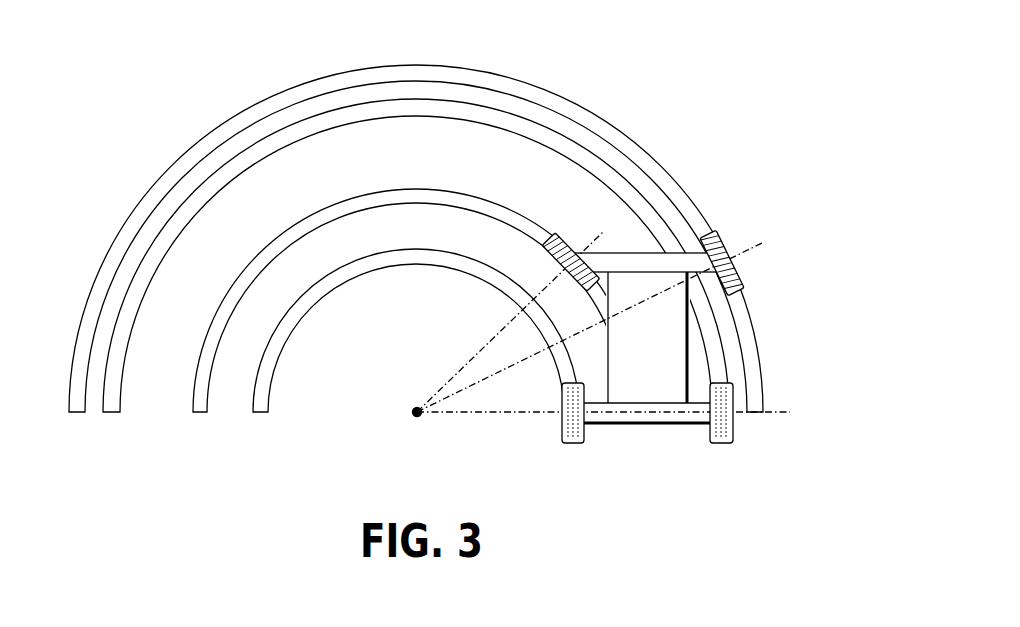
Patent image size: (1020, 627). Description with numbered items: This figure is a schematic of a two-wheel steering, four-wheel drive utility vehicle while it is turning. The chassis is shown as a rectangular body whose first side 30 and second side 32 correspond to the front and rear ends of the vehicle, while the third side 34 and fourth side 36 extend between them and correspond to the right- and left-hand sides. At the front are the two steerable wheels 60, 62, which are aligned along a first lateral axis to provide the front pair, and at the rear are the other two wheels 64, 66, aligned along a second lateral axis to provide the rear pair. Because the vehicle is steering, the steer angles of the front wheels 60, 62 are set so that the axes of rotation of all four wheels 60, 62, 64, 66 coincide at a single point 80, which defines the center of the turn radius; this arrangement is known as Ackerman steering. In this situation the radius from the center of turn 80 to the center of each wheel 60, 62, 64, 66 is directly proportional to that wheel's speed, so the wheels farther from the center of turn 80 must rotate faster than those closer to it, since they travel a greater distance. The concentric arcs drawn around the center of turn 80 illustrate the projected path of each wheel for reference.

The first side 30 is at (648, 239).
The second side 32 is at (648, 437).
The third side 34 is at (698, 350).
The fourth side 36 is at (598, 354).
The wheel 60 is at (576, 236).
The wheel 62 is at (740, 268).
The wheel 64 is at (560, 428).
The wheel 66 is at (734, 428).
The center of turn 80 is at (416, 407).